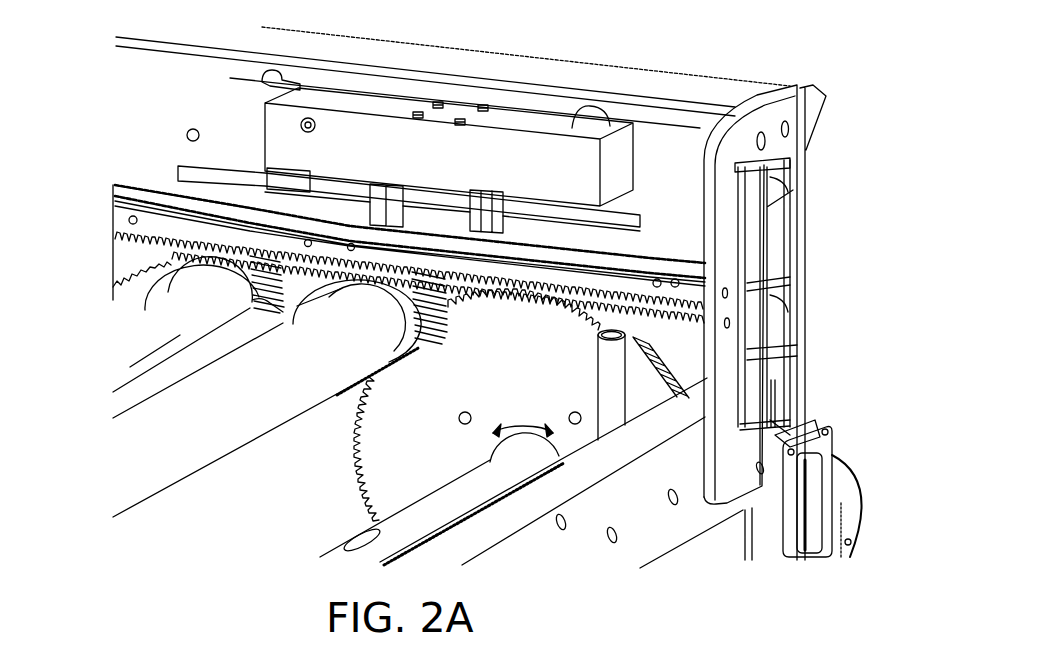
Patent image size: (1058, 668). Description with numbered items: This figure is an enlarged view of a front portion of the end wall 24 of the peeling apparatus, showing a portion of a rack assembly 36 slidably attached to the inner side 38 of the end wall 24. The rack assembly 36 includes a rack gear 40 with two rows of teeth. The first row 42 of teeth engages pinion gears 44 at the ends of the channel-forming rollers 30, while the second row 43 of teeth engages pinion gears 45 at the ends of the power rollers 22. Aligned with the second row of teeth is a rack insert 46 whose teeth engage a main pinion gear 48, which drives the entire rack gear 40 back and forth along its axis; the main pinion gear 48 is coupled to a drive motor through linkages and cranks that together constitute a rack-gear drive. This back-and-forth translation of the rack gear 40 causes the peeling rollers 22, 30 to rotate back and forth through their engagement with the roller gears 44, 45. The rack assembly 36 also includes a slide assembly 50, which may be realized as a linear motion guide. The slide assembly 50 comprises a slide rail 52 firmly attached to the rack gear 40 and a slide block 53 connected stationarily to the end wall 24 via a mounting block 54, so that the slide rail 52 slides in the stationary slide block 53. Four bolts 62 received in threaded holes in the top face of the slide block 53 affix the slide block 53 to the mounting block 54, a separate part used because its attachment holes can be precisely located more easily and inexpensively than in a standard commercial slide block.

The power rollers 22 is at (143, 388).
The end wall 24 is at (683, 122).
The channel-forming rollers 30 is at (127, 310).
The rack assembly 36 is at (62, 80).
The inner side 38 is at (178, 70).
The rack gear 40 is at (112, 186).
The first row of teeth 42 is at (693, 286).
The second row of teeth 43 is at (148, 300).
The pinion gears 44 is at (364, 427).
The pinion gears 45 is at (303, 300).
The rack insert 46 is at (690, 320).
The main pinion gear 48 is at (530, 384).
The slide assembly 50 is at (165, 135).
The slide rail 52 is at (237, 172).
The slide block 53 is at (470, 196).
The mounting block 54 is at (352, 108).
The bolts 62 is at (464, 207).